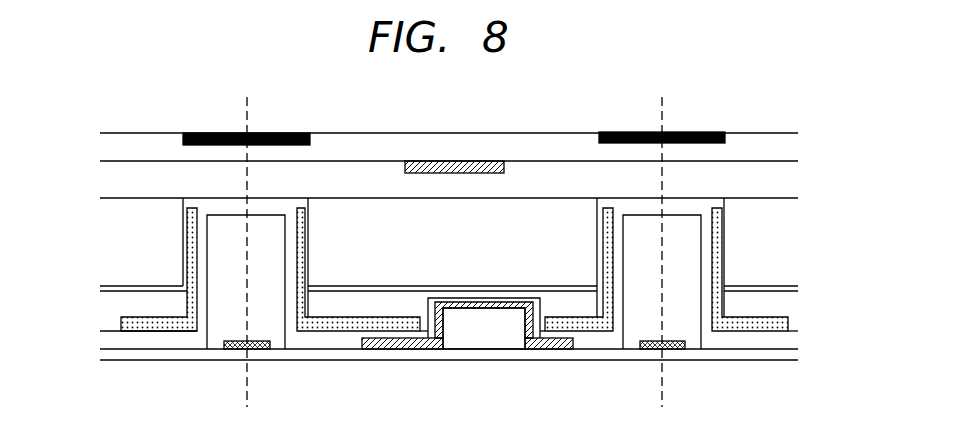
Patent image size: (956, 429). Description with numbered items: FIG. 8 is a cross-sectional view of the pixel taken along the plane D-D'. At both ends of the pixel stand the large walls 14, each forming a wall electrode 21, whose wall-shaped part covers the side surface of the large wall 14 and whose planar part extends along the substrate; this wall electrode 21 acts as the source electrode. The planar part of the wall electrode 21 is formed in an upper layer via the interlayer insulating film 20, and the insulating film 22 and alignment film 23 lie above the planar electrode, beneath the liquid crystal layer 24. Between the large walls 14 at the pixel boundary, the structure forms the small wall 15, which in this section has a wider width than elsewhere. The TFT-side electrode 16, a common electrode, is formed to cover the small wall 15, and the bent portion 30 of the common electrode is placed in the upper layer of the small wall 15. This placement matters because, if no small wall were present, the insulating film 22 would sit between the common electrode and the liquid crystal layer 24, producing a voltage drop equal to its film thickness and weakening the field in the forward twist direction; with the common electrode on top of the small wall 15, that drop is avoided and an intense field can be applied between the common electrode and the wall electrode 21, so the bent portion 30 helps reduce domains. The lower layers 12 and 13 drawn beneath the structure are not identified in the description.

The substrate 12 is at (323, 355).
The contact electrode 13 is at (237, 352).
The large wall 14 is at (273, 222).
The small wall 15 is at (467, 340).
The TFT-side electrode 16 is at (407, 349).
The interlayer insulating film 20 is at (140, 340).
The wall electrode 21 is at (305, 222).
The insulating film 22 is at (127, 304).
The alignment film 23 is at (185, 257).
The liquid crystal layer 24 is at (540, 218).
The bent portion 30 is at (490, 309).